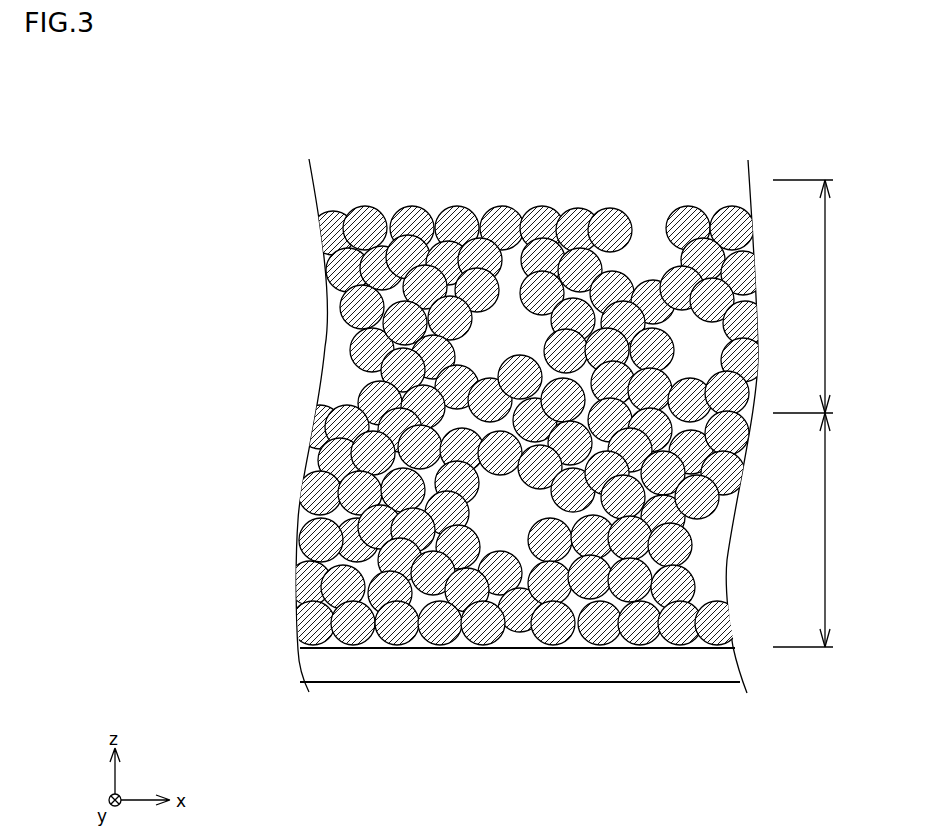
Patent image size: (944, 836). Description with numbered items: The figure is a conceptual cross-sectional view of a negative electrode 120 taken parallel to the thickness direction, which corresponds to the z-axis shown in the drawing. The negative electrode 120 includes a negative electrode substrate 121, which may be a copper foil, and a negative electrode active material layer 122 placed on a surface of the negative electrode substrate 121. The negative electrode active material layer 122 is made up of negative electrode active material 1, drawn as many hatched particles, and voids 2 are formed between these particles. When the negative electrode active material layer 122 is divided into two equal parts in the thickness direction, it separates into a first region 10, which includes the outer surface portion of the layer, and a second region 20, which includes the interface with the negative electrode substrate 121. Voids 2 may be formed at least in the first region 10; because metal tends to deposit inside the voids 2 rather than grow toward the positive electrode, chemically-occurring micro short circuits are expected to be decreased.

The negative electrode active material 1 is at (300, 533).
The voids 2 is at (510, 330).
The first region 10 is at (816, 296).
The second region 20 is at (816, 530).
The negative electrode 120 is at (748, 103).
The negative electrode substrate 121 is at (476, 672).
The negative electrode active material layer 122 is at (175, 178).